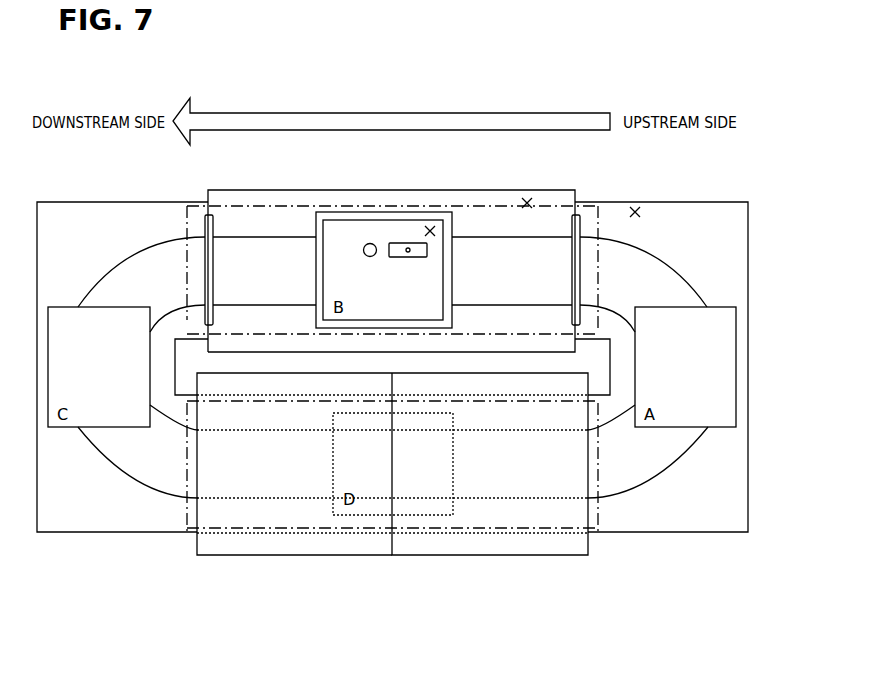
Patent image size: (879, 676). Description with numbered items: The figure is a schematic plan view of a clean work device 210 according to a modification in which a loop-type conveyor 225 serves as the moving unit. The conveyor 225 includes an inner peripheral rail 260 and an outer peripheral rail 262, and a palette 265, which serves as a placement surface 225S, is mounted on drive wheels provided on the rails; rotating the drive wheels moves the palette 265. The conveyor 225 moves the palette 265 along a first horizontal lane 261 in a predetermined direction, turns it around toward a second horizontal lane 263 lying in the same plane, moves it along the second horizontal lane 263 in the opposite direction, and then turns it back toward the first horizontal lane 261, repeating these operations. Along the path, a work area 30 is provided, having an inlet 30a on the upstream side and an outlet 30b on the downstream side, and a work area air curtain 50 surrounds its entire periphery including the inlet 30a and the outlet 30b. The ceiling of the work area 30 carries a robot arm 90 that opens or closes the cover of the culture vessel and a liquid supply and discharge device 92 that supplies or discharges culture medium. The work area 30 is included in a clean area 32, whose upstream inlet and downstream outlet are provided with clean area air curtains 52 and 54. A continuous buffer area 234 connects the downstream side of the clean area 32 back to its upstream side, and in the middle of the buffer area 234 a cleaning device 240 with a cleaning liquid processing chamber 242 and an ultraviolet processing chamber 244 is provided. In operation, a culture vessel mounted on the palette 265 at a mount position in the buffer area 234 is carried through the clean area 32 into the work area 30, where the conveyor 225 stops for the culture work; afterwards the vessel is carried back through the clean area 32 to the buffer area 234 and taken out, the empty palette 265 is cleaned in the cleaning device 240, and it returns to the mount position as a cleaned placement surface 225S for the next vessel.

The clean work device 210 is at (642, 77).
The conveyor 225 is at (283, 237).
The placement surface 225S is at (135, 330).
The palette 265 is at (102, 325).
The clean area air curtain 54 is at (209, 235).
The clean area air curtain 52 is at (580, 222).
The work area 30 is at (430, 231).
The inlet 30a is at (447, 228).
The outlet 30b is at (318, 268).
The work area air curtain 50 is at (445, 267).
The liquid supply and discharge device 92 is at (372, 243).
The robot arm 90 is at (412, 242).
The clean area 32 is at (525, 203).
The buffer area 234 is at (638, 207).
The inner peripheral rail 260 is at (168, 420).
The outer peripheral rail 262 is at (148, 490).
The second horizontal lane 263 is at (603, 462).
The first horizontal lane 261 is at (602, 277).
The cleaning device 240 is at (392, 510).
The cleaning liquid processing chamber 242 is at (368, 543).
The ultraviolet processing chamber 244 is at (423, 543).